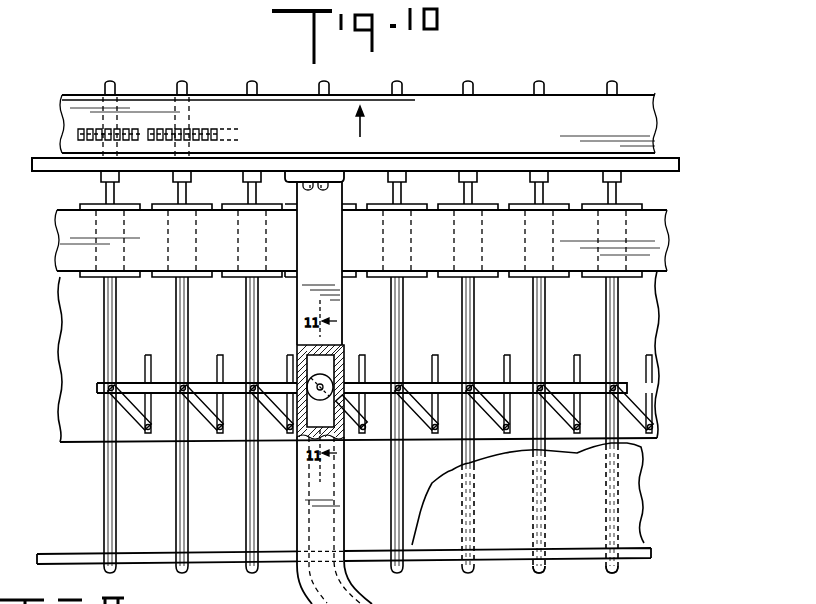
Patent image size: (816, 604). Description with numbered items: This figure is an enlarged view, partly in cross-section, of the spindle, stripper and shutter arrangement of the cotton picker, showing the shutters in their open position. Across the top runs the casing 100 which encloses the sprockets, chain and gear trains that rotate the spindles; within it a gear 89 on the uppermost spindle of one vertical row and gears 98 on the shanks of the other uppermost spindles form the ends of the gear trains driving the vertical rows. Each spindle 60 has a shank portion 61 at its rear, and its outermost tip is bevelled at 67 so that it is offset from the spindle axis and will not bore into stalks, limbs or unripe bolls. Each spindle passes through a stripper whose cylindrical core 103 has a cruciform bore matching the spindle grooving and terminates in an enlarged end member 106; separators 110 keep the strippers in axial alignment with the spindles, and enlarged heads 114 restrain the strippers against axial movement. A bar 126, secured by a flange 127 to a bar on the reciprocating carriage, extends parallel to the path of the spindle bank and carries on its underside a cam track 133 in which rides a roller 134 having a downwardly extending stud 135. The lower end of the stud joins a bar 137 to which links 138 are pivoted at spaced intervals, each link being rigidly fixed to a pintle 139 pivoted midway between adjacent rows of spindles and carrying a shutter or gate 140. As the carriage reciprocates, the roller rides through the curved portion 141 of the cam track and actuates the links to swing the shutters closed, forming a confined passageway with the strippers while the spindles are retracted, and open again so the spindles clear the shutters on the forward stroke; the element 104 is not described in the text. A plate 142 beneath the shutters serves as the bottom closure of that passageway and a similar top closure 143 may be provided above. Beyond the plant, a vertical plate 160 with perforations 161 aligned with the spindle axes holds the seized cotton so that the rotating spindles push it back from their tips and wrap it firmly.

The spindle 60 is at (107, 340).
The shank portion 61 is at (182, 86).
The bevelled end 67 is at (621, 577).
The gear 89 is at (78, 137).
The gear 98 is at (233, 127).
The casing 100 is at (641, 118).
The cylindrical portion or core 103 is at (100, 237).
The post 104 is at (507, 352).
The enlarged end member 106 is at (88, 280).
The separators 110 is at (657, 242).
The enlarged heads 114 is at (90, 203).
The bar 126 is at (329, 287).
The flange 127 is at (429, 160).
The cam track 133 is at (336, 364).
The roller 134 is at (316, 377).
The stud 135 is at (439, 437).
The bar 137 is at (629, 383).
The links 138 is at (147, 432).
The pintle 139 is at (222, 432).
The shutter or gate 140 is at (152, 355).
The curved portion 141 is at (398, 598).
The plate 142 is at (662, 412).
The top closure 143 is at (634, 497).
The plate 160 is at (457, 557).
The perforations 161 is at (567, 552).